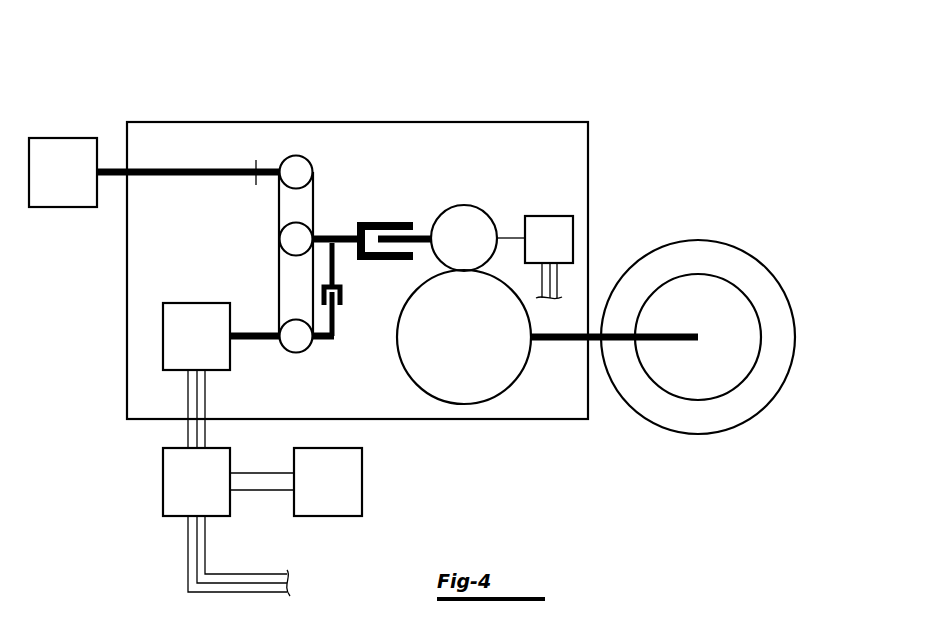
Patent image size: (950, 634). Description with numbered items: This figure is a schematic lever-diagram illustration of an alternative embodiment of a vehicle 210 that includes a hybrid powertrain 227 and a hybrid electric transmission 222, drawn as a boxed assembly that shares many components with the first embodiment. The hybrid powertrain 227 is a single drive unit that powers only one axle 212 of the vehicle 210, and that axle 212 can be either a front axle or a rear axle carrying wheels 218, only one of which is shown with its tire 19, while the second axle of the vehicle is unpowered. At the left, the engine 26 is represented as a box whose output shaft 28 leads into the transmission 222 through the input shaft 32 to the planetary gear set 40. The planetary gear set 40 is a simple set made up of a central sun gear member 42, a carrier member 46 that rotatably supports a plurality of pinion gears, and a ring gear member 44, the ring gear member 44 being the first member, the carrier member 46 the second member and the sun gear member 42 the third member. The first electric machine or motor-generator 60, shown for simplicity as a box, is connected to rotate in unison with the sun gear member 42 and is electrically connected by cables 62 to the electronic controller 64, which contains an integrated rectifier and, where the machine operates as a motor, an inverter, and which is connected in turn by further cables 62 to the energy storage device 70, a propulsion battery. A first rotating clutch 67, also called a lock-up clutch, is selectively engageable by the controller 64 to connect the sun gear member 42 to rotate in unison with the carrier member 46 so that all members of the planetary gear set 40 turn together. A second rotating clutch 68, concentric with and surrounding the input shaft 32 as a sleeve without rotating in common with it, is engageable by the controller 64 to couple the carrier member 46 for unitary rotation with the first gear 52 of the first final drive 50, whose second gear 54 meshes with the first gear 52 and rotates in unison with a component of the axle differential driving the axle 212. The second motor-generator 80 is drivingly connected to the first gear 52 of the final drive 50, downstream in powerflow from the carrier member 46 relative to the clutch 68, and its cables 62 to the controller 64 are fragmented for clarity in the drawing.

The tires 19 is at (797, 337).
The engine 26 is at (72, 189).
The output shaft 28 is at (216, 166).
The input shaft 32 is at (259, 162).
The planetary gear set 40 is at (278, 208).
The sun gear member 42 is at (290, 350).
The ring gear member 44 is at (295, 155).
The carrier member 46 is at (300, 225).
The first final drive 50 is at (398, 312).
The first gear 52 is at (484, 214).
The second gear 54 is at (474, 354).
The motor-generator 60 is at (206, 352).
The cables 62 is at (187, 441).
The controller 64 is at (206, 497).
The first rotating clutch 67 is at (345, 318).
The second rotating clutch 68 is at (380, 220).
The energy storage device 70 is at (337, 497).
The second motor-generator 80 is at (560, 254).
The vehicle 210 is at (558, 102).
The axle 212 is at (625, 345).
The wheels 218 is at (698, 274).
The hybrid electric transmission 222 is at (468, 121).
The hybrid powertrain 227 is at (133, 44).